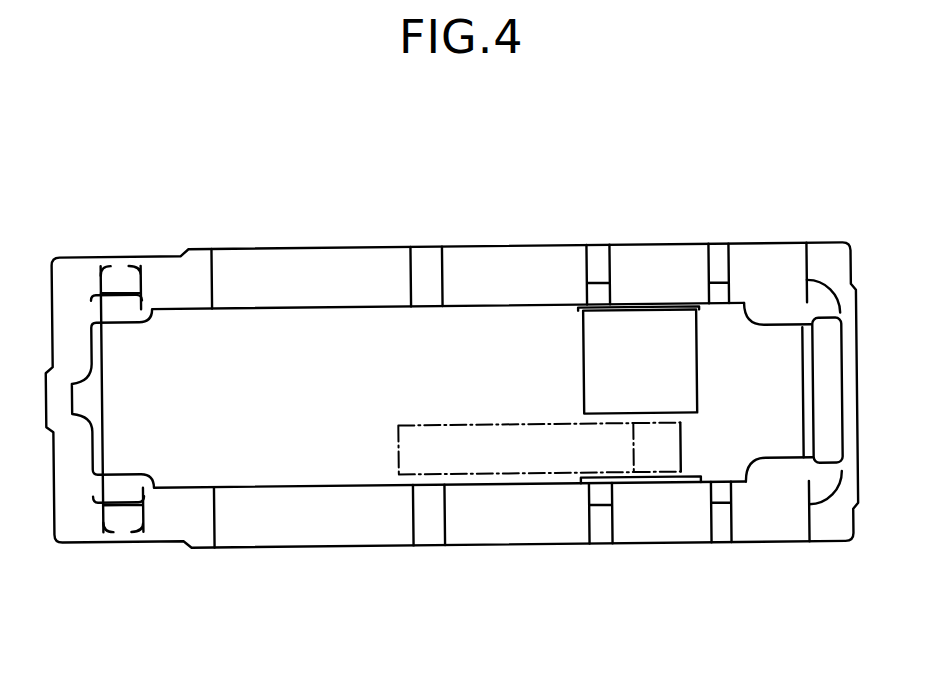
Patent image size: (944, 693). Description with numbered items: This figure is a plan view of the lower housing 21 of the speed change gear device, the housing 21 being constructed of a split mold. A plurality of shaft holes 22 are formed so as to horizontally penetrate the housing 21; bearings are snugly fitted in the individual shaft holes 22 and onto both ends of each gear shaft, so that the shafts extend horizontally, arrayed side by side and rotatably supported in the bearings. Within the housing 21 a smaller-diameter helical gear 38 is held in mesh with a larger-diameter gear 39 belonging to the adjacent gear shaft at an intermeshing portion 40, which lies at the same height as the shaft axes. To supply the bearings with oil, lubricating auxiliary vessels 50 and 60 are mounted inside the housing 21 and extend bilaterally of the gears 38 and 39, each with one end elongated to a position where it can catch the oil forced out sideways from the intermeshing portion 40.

The housing 21 is at (196, 243).
The shaft holes 22 is at (412, 270).
The gear 38 is at (686, 457).
The gear 39 is at (536, 479).
The intermeshing portion 40 is at (630, 465).
The lubricating auxiliary vessel 50 is at (688, 488).
The lubricating auxiliary vessel 60 is at (704, 348).